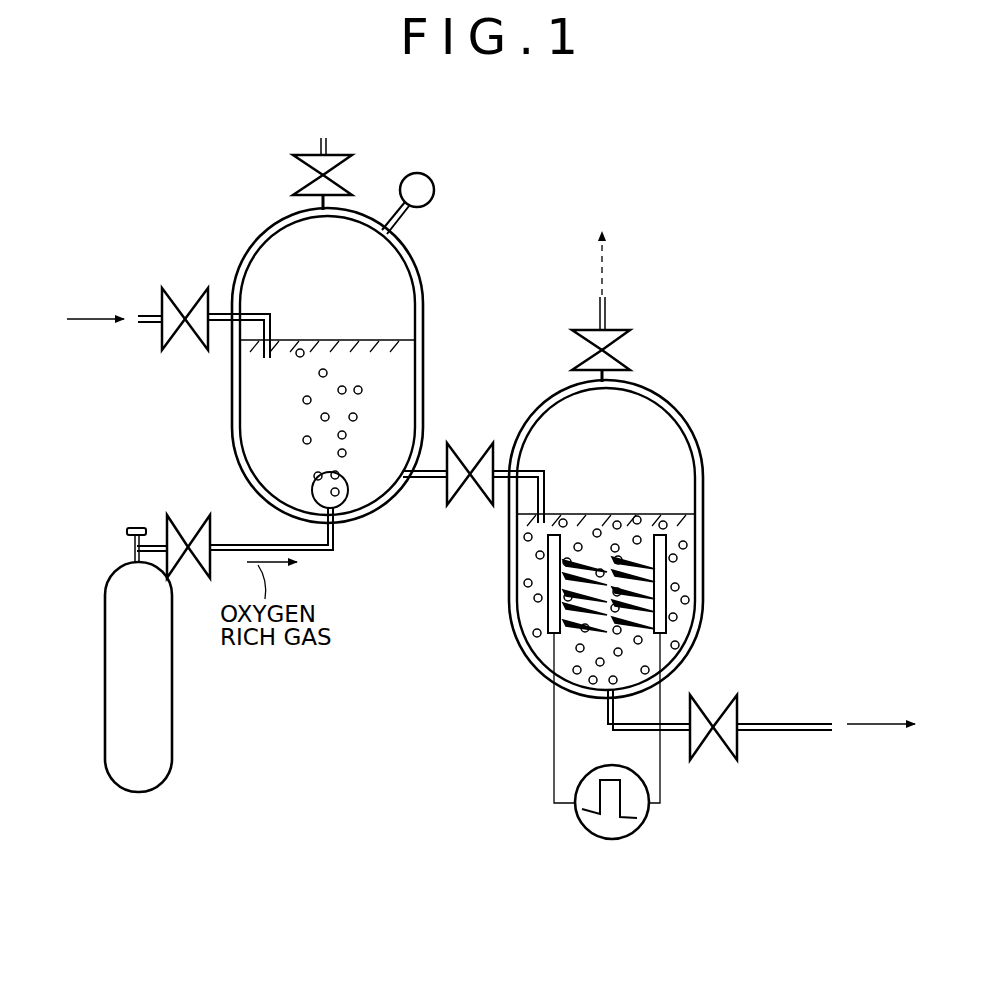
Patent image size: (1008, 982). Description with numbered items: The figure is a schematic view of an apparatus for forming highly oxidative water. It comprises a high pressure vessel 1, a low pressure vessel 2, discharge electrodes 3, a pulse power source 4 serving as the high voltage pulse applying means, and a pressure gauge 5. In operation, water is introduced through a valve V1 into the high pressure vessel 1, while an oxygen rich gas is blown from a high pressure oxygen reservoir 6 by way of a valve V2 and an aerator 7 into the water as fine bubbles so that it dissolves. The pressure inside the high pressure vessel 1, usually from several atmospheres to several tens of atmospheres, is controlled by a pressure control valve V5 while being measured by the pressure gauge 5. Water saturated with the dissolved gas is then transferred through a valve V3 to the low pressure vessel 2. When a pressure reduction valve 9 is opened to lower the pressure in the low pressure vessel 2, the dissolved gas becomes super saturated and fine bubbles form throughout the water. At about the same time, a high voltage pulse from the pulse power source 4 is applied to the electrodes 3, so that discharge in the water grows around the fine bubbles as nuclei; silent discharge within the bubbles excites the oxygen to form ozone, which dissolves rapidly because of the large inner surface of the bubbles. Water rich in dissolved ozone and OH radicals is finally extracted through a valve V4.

The high pressure vessel 1 is at (256, 229).
The low pressure vessel 2 is at (681, 397).
The discharge electrodes 3 is at (553, 612).
The pulse power source 4 is at (594, 838).
The pressure gauge 5 is at (437, 191).
The high pressure oxygen reservoir 6 is at (152, 703).
The aerator 7 is at (355, 492).
The pressure reduction valve 9 is at (618, 330).
The valve V1 is at (185, 330).
The valve V2 is at (188, 545).
The valve V3 is at (470, 478).
The valve V4 is at (714, 730).
The pressure control valve V5 is at (325, 175).